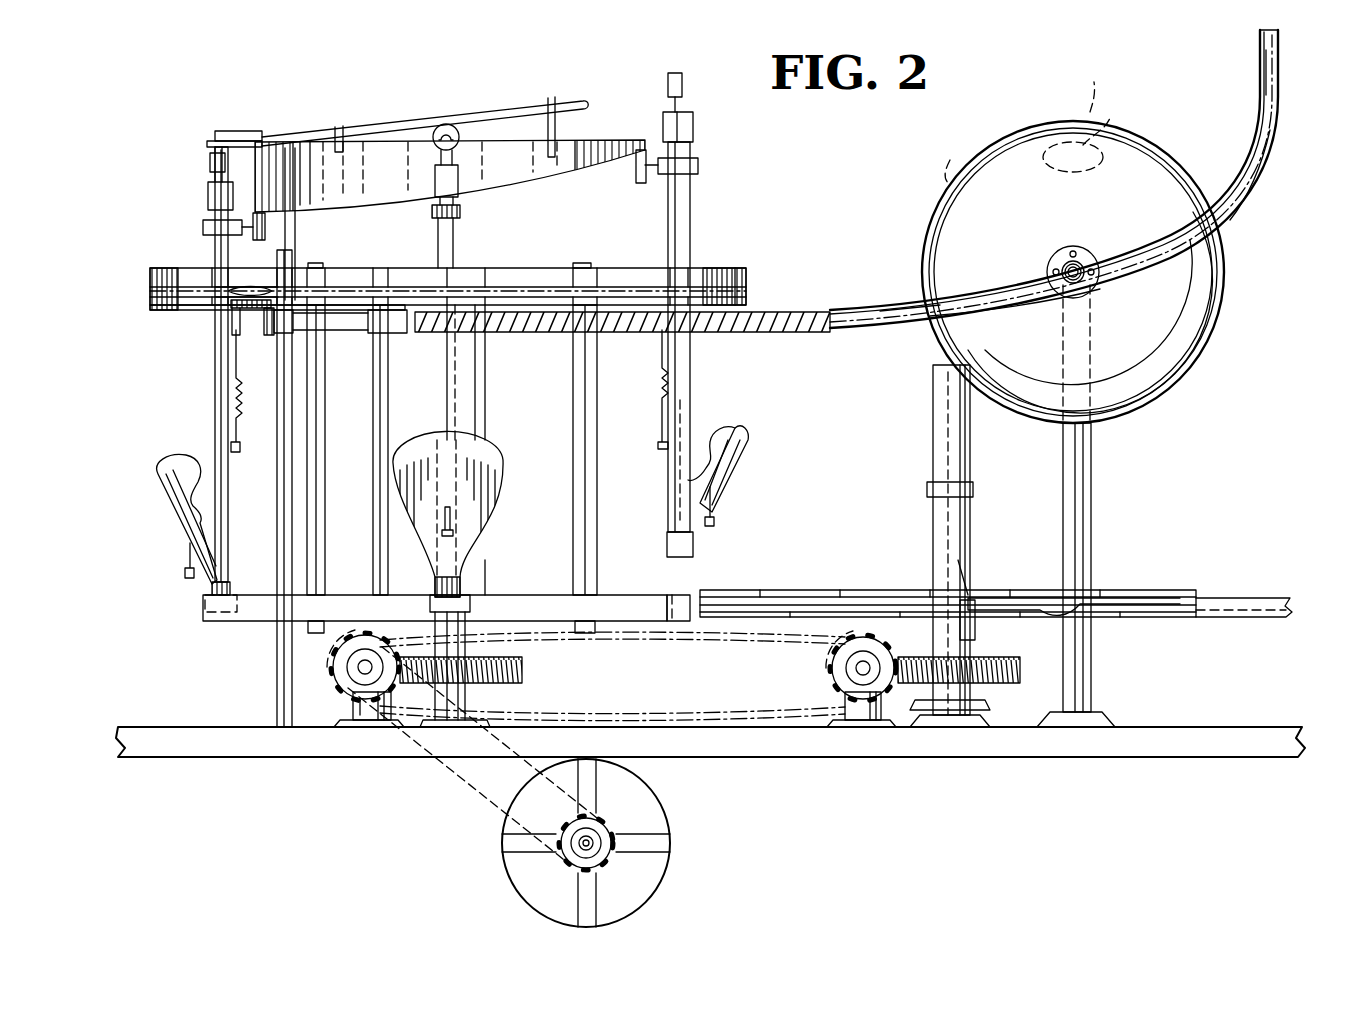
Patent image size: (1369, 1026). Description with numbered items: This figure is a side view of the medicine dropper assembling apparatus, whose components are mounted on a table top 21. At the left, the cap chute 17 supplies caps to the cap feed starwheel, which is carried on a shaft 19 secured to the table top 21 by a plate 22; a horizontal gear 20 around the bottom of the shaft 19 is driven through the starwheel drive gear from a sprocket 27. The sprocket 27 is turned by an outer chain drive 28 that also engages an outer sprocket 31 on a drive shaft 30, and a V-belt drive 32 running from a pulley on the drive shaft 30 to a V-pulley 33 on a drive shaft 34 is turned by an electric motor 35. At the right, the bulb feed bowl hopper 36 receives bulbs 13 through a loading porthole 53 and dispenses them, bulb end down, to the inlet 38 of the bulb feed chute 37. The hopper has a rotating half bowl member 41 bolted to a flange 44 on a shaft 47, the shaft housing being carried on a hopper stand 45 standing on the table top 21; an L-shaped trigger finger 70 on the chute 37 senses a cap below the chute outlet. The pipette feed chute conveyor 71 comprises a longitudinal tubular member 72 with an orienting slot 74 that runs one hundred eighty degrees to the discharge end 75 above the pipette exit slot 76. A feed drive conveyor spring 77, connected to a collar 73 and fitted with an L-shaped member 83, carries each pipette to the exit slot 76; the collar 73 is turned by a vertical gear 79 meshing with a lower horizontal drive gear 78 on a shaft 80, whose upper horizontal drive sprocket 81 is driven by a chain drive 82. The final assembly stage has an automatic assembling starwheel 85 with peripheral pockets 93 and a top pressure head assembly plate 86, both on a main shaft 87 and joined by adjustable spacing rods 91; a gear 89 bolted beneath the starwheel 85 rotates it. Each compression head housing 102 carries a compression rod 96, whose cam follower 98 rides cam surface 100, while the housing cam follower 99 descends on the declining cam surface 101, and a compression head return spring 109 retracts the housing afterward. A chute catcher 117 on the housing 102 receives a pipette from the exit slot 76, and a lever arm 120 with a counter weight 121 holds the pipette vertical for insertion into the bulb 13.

The bulb 13 is at (948, 170).
The cap chute 17 is at (1275, 598).
The shaft 19 is at (962, 637).
The horizontal gear 20 is at (1020, 690).
The table top 21 is at (1210, 757).
The plate 22 is at (955, 727).
The sprocket 27 is at (870, 705).
The outer chain drive 28 is at (710, 715).
The drive shaft 30 is at (365, 667).
The outer sprocket 31 is at (383, 690).
The V-belt drive 32 is at (465, 793).
The V-pulley 33 is at (600, 862).
The drive shaft 34 is at (592, 840).
The electric motor 35 is at (670, 852).
The bulb feed bowl hopper 36 is at (1232, 290).
The bulb feed chute 37 is at (930, 428).
The inlet 38 is at (878, 310).
The rotating half bowl member 41 is at (1130, 155).
The flange 44 is at (1097, 266).
The hopper stand 45 is at (1088, 497).
The shaft 47 is at (1076, 265).
The loading porthole 53 is at (1110, 115).
The L-shaped trigger finger 70 is at (1093, 602).
The pipette feed chute conveyor 71 is at (1285, 140).
The longitudinal tubular member 72 is at (1245, 190).
The collar 73 is at (392, 308).
The slot 74 is at (985, 327).
The discharge end 75 is at (490, 310).
The pipette exit slot 76 is at (425, 330).
The feed drive conveyor spring 77 is at (800, 312).
The lower horizontal drive gear 78 is at (240, 300).
The vertical gear 79 is at (262, 322).
The shaft 80 is at (228, 292).
The upper horizontal drive sprocket 81 is at (255, 275).
The chain drive 82 is at (295, 268).
The L-shaped member 83 is at (590, 300).
The automatic assembling starwheel 85 is at (668, 597).
The top pressure head assembly plate 86 is at (750, 268).
The main shaft 87 is at (470, 125).
The gear 89 is at (522, 668).
The adjustable spacing rods 91 is at (590, 492).
The pockets 93 is at (700, 594).
The compression rod 96 is at (690, 112).
The compression rod cam follower 98 is at (675, 73).
The compression head cam follower 99 is at (637, 150).
The cam surface 100 is at (585, 108).
The declining cam surface 101 is at (578, 170).
The compression head housing 102 is at (690, 380).
The compression head return spring 109 is at (236, 398).
The chute catcher 117 is at (748, 447).
The lever arm 120 is at (712, 503).
The counter weight 121 is at (715, 521).